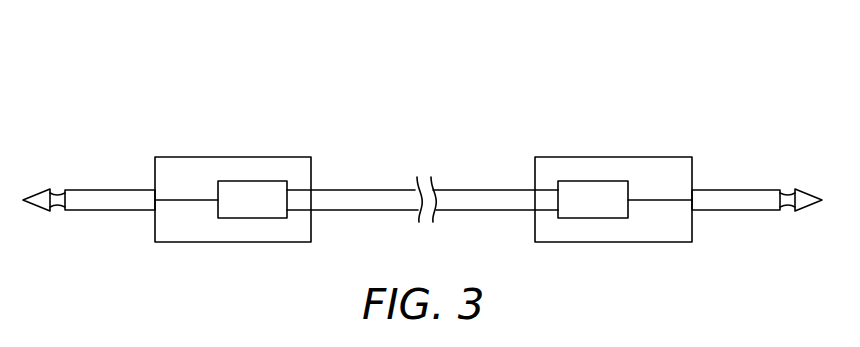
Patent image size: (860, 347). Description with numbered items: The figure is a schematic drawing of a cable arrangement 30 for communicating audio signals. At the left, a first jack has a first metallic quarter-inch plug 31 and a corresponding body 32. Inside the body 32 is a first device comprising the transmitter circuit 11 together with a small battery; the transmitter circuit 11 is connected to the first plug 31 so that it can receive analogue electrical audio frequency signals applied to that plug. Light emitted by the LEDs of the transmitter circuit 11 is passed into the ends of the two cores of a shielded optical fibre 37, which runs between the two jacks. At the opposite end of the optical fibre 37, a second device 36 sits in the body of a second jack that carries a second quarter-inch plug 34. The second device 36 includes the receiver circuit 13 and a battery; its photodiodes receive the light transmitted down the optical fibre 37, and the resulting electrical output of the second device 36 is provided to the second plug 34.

The cable arrangement 30 is at (150, 85).
The first metallic quarter-inch plug 31 is at (103, 212).
The body 32 is at (195, 157).
The transmitter circuit 11 is at (253, 181).
The shielded optical fibre 37 is at (360, 211).
The receiver circuit 13 is at (645, 157).
The second device 36 is at (590, 181).
The second quarter-inch plug 34 is at (743, 211).